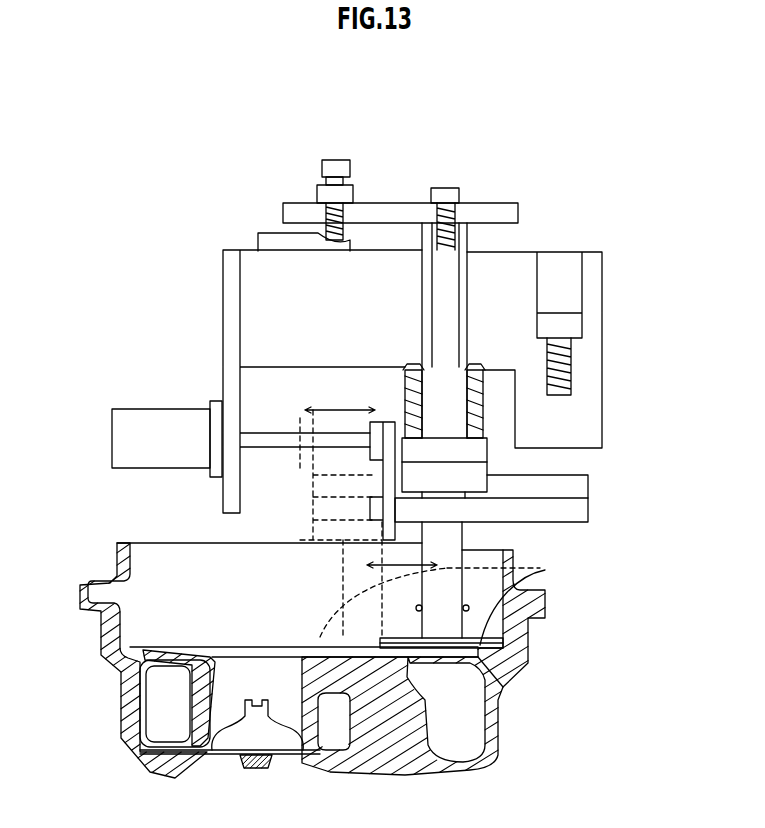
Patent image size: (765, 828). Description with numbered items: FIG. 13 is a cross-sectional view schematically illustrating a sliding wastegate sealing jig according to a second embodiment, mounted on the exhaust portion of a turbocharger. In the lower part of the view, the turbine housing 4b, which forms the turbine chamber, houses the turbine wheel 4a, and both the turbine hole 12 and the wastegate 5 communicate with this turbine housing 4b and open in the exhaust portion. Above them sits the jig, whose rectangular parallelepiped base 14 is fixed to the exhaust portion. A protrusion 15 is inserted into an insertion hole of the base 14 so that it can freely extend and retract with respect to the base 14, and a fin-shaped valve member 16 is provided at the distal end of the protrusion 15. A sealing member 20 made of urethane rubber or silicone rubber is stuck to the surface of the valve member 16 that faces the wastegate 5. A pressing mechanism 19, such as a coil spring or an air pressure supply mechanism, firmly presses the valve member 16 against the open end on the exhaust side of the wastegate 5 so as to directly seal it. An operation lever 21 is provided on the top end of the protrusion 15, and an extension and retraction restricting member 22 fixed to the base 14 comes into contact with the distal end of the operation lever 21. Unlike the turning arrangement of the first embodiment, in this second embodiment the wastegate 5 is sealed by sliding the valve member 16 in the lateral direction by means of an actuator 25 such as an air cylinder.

The operation lever 21 is at (335, 158).
The extension and retraction restricting member 22 is at (272, 236).
The protrusion 15 is at (467, 290).
The base 14 is at (602, 280).
The actuator 25 is at (168, 408).
The pressing mechanism 19 is at (484, 400).
The valve member 16 is at (523, 602).
The turbine hole 12 is at (233, 703).
The sealing member 20 is at (500, 692).
The turbine wheel 4a is at (225, 732).
The turbine housing 4b is at (132, 772).
The wastegate 5 is at (470, 724).